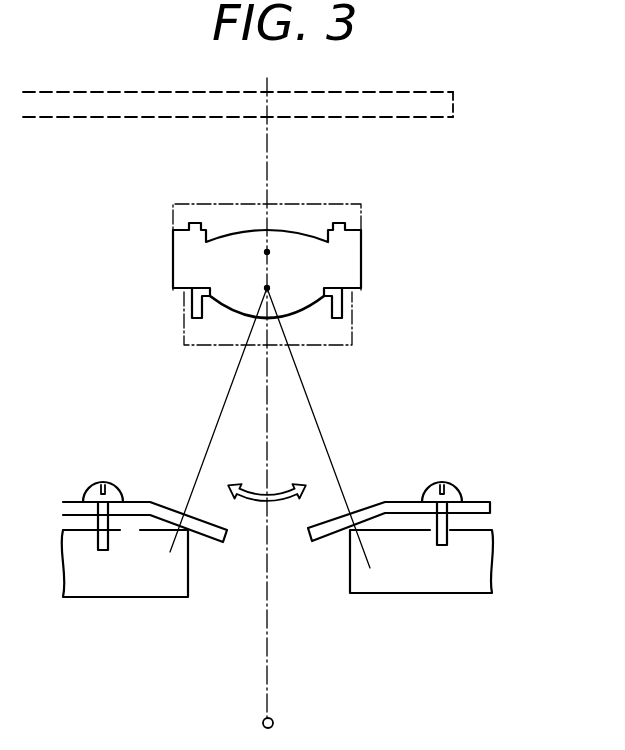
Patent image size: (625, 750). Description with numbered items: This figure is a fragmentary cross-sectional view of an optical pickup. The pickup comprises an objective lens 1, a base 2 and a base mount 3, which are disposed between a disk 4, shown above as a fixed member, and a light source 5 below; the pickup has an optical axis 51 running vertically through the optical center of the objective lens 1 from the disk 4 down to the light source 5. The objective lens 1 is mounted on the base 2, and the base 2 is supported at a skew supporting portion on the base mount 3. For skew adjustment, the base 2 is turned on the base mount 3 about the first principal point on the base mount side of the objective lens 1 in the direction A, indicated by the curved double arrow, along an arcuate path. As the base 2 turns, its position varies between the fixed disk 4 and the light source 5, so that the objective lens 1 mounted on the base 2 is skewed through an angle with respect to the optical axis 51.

The objective lens 1 is at (361, 206).
The base 2 is at (477, 502).
The base mount 3 is at (468, 593).
The disk 4 is at (453, 96).
The light source 5 is at (273, 721).
The optical axis 51 is at (267, 568).
The direction A is at (267, 477).